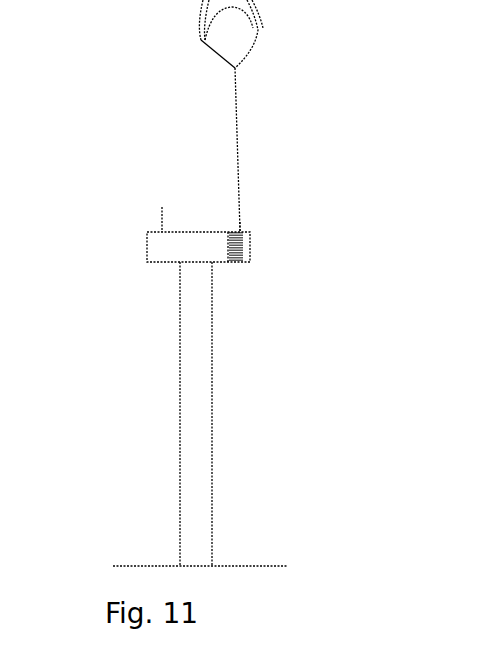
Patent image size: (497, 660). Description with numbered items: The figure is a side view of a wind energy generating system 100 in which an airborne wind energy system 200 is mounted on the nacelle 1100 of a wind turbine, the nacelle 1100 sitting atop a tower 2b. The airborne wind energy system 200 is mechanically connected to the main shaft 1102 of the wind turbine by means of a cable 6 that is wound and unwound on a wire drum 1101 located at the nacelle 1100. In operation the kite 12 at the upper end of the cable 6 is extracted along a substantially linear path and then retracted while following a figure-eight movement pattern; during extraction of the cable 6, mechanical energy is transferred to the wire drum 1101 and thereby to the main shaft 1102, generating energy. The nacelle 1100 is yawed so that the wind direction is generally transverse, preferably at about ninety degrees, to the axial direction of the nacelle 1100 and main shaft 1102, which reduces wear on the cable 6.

The wind energy generating system 100 is at (87, 202).
The kite 12 is at (257, 22).
The cable 6 is at (237, 141).
The nacelle 1100 is at (168, 247).
The airborne wind energy system 200 is at (241, 220).
The wire drum 1101 is at (239, 257).
The main shaft 1102 is at (228, 246).
The pole 2b is at (200, 463).